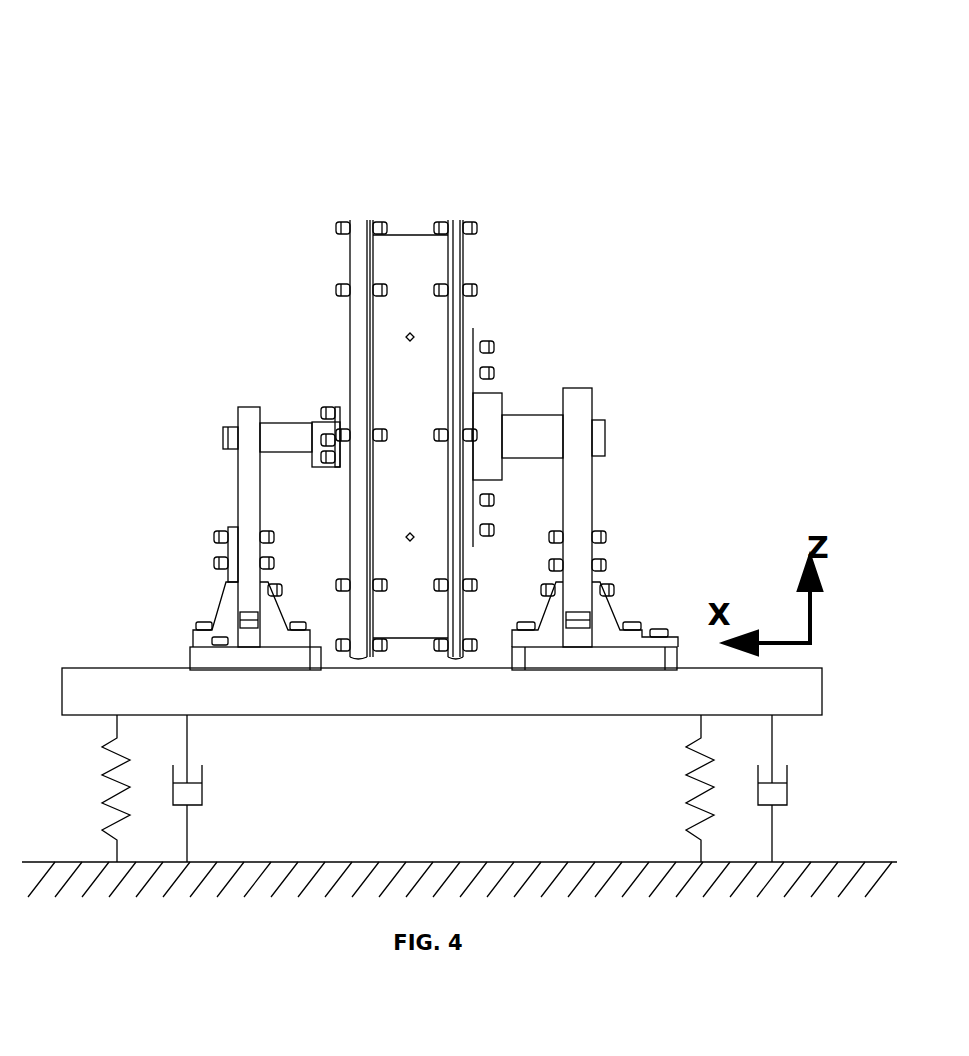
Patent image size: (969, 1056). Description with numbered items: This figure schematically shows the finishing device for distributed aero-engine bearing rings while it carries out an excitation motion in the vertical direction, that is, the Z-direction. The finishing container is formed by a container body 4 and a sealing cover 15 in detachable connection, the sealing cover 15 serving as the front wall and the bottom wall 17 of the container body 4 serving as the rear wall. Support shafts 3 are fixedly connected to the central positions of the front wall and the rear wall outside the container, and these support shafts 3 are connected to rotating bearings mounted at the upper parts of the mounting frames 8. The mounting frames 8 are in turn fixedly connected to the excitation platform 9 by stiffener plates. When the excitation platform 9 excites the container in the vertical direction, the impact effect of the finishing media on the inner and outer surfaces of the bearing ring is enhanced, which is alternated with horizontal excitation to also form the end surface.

The support shaft 3 is at (600, 339).
The container body 4 is at (427, 334).
The mounting frame 8 is at (238, 340).
The excitation platform 9 is at (459, 453).
The sealing cover 15 is at (333, 332).
The bottom wall 17 is at (499, 383).